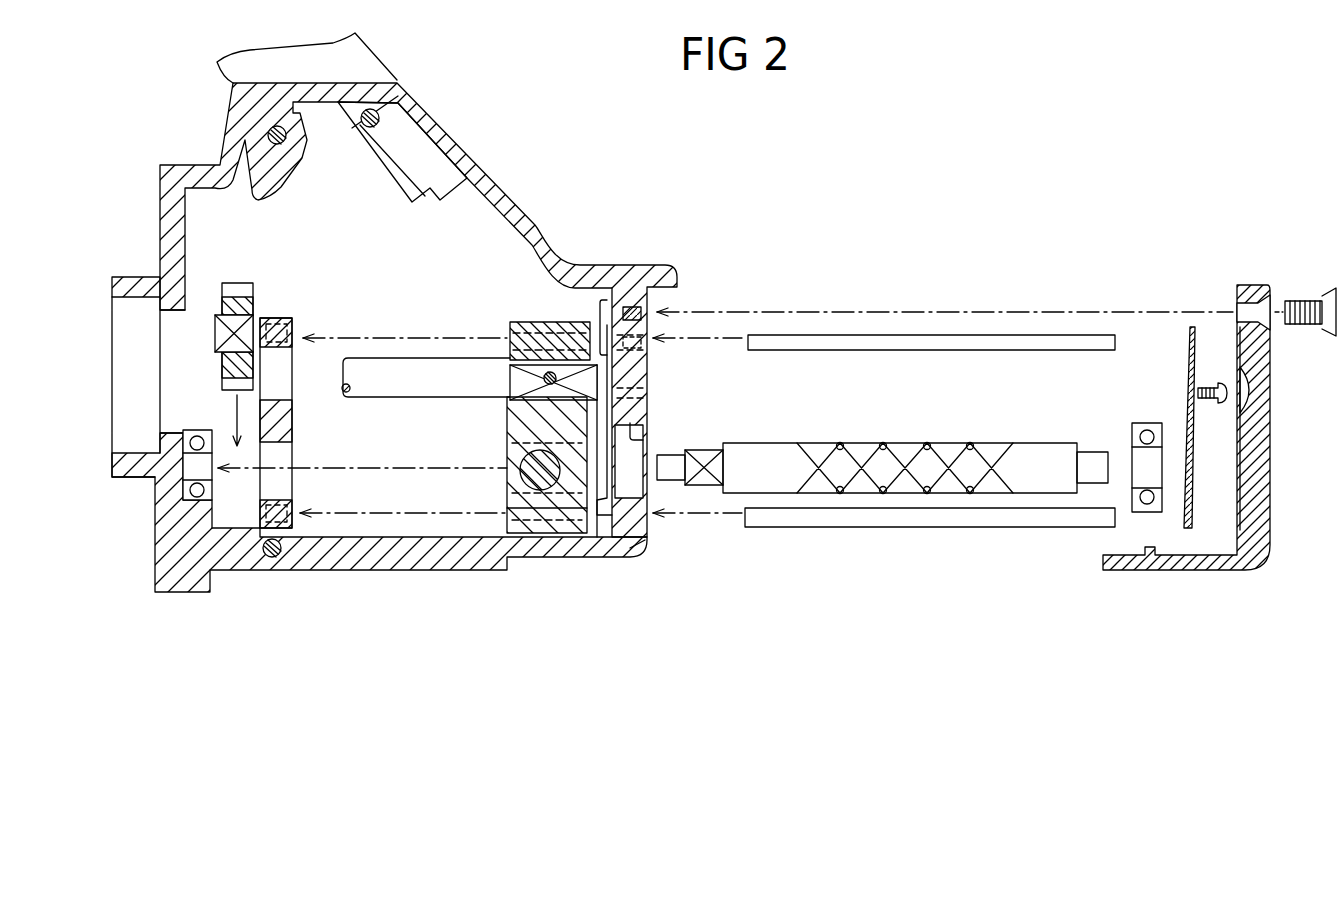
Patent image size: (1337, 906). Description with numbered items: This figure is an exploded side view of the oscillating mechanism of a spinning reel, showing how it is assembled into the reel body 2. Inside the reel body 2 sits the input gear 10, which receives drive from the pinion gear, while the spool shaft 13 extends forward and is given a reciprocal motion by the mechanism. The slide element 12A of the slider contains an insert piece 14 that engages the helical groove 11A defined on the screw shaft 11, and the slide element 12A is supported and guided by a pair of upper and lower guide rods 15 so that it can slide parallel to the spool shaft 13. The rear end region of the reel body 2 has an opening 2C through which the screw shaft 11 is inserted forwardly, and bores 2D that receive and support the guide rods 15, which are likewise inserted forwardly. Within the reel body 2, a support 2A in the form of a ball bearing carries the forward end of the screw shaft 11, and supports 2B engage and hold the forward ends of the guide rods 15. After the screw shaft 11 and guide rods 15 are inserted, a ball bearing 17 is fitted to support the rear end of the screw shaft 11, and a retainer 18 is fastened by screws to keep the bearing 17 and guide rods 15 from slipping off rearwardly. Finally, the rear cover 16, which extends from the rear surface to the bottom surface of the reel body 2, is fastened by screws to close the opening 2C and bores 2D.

The reel body 2 is at (518, 208).
The support 2A is at (212, 497).
The supports 2B is at (293, 347).
The opening 2C is at (633, 433).
The bores 2D is at (646, 343).
The input gear 10 is at (247, 285).
The screw shaft 11 is at (778, 452).
The helical groove 11A is at (968, 435).
The slide element 12A is at (523, 328).
The spool shaft 13 is at (393, 390).
The insert piece 14 is at (533, 467).
The guide rods 15 is at (930, 343).
The rear cover 16 is at (1263, 488).
The ball bearing 17 is at (1130, 425).
The retainer 18 is at (1190, 370).